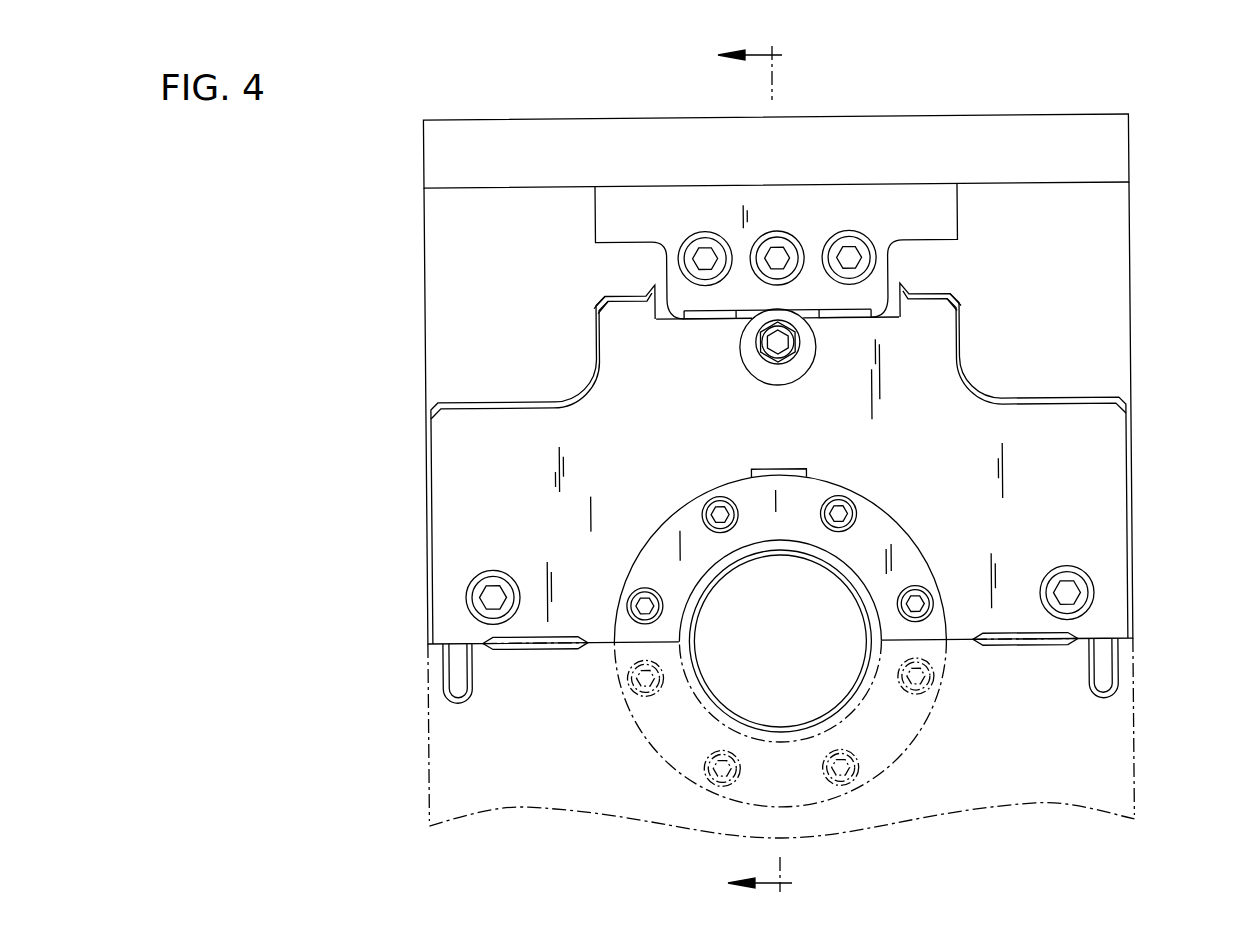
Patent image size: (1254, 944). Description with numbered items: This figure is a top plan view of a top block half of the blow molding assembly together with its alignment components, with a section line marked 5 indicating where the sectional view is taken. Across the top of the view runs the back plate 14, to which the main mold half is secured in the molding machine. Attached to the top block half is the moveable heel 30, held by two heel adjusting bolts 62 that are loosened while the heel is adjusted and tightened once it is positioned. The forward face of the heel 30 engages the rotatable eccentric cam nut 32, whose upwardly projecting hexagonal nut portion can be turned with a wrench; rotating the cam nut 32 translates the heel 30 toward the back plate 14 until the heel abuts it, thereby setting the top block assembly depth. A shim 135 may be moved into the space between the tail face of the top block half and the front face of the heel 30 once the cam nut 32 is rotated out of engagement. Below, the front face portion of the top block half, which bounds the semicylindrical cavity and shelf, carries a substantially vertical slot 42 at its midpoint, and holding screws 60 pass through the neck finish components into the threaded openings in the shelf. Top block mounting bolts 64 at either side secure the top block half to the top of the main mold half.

The back plate 14 is at (1112, 155).
The moveable heel 30 is at (912, 211).
The heel adjusting bolts 62 is at (690, 247).
The shim 135 is at (704, 313).
The eccentric cam nut 32 is at (756, 347).
The vertical slot 42 is at (770, 468).
The holding screws 60 is at (647, 587).
The top block mounting bolts 64 is at (485, 572).
The section line 5- 5 is at (768, 471).